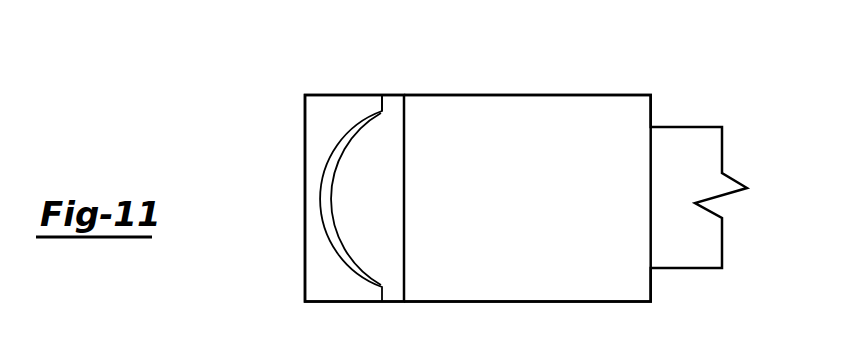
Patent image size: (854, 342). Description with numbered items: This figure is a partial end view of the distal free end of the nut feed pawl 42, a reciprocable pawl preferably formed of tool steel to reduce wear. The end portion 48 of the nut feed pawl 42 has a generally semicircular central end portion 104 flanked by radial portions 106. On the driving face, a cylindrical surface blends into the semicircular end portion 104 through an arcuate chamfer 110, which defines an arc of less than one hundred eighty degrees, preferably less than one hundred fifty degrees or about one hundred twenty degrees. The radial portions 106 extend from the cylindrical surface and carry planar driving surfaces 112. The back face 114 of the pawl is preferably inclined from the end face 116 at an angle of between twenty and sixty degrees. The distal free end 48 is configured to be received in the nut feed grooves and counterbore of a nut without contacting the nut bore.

The nut feed pawl 42 is at (534, 78).
The end portion 48 is at (286, 276).
The semicircular central end portion 104 is at (332, 186).
The radial portions 106 is at (392, 103).
The arcuate chamfer 110 is at (325, 222).
The planar driving surfaces 112 is at (381, 100).
The back face 114 is at (553, 220).
The end face 116 is at (452, 177).